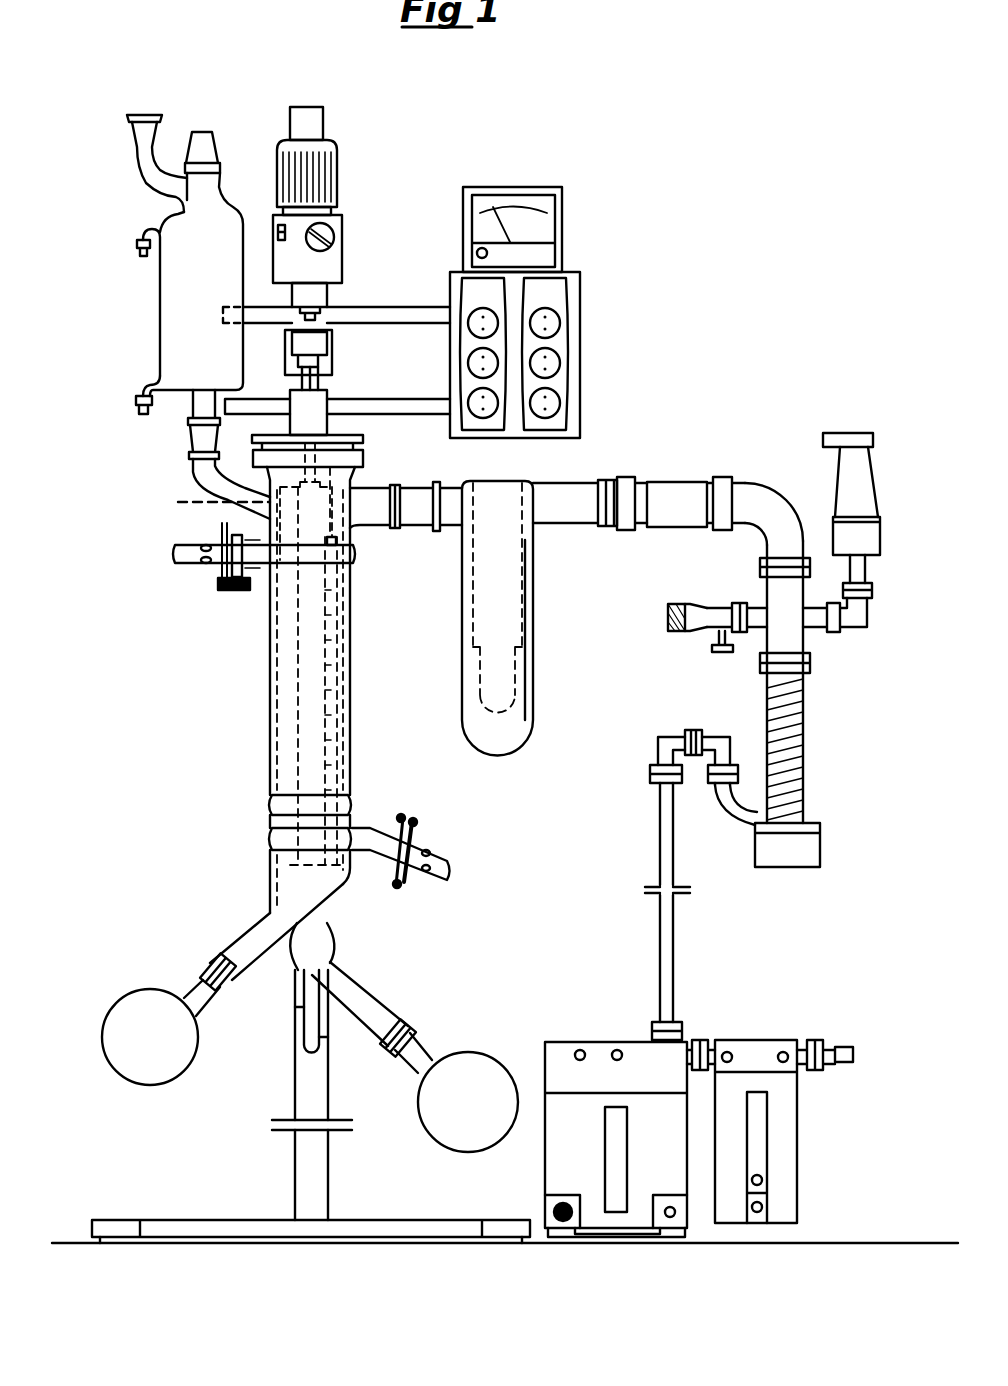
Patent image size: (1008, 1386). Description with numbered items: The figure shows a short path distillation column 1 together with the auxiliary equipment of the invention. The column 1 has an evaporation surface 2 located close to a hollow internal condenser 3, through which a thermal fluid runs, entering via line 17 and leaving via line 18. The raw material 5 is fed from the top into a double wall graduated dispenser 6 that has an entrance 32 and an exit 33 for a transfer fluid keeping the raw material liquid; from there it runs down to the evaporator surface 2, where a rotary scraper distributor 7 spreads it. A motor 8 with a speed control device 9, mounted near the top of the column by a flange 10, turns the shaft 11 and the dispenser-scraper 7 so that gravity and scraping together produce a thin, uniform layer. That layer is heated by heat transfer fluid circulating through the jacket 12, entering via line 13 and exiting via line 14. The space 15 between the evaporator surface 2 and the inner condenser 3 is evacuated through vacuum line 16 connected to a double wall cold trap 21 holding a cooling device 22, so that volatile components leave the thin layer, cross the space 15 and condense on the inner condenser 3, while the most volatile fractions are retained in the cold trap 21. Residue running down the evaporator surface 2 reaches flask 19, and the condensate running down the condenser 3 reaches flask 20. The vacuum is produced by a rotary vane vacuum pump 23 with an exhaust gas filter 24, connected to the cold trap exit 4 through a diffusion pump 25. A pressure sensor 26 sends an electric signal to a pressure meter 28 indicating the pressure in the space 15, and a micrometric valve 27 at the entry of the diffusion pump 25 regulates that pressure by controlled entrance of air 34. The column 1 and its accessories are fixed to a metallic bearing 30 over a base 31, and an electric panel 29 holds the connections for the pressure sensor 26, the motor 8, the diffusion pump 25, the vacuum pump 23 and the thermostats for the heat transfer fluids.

The short path distillation column 1 is at (300, 723).
The evaporation surface 2 is at (345, 638).
The hollow internal condenser 3 is at (333, 907).
The cold trap exit 4 is at (680, 481).
The raw material 5 is at (132, 113).
The double wall graduated dispenser 6 is at (160, 323).
The rotary scraper distributor 7 is at (344, 505).
The motor 8 is at (338, 172).
The motor controller 9 is at (343, 250).
The flange 10 is at (363, 457).
The shaft 11 is at (209, 503).
The jacket 12 is at (266, 805).
The line 13 is at (447, 846).
The line 14 is at (180, 566).
The space 15 is at (271, 668).
The vacuum line 16 is at (376, 530).
The line 17 is at (295, 1013).
The line 18 is at (322, 1037).
The flask 19 is at (146, 991).
The flask 20 is at (476, 1053).
The double wall cold trap 21 is at (534, 618).
The trap inner tube 22 is at (524, 676).
The rotary vane vacuum pump 23 is at (604, 1040).
The pump 24 is at (748, 1040).
The diffusion pump 25 is at (806, 746).
The pressure sensor 26 is at (880, 505).
The micrometric valve 27 is at (678, 605).
The meter 28 is at (562, 227).
The electric panel 29 is at (580, 340).
The metallic bearing 30 is at (295, 1177).
The base 31 is at (165, 1219).
The entrance 32 is at (137, 404).
The exit 33 is at (137, 252).
The air 34 is at (710, 650).